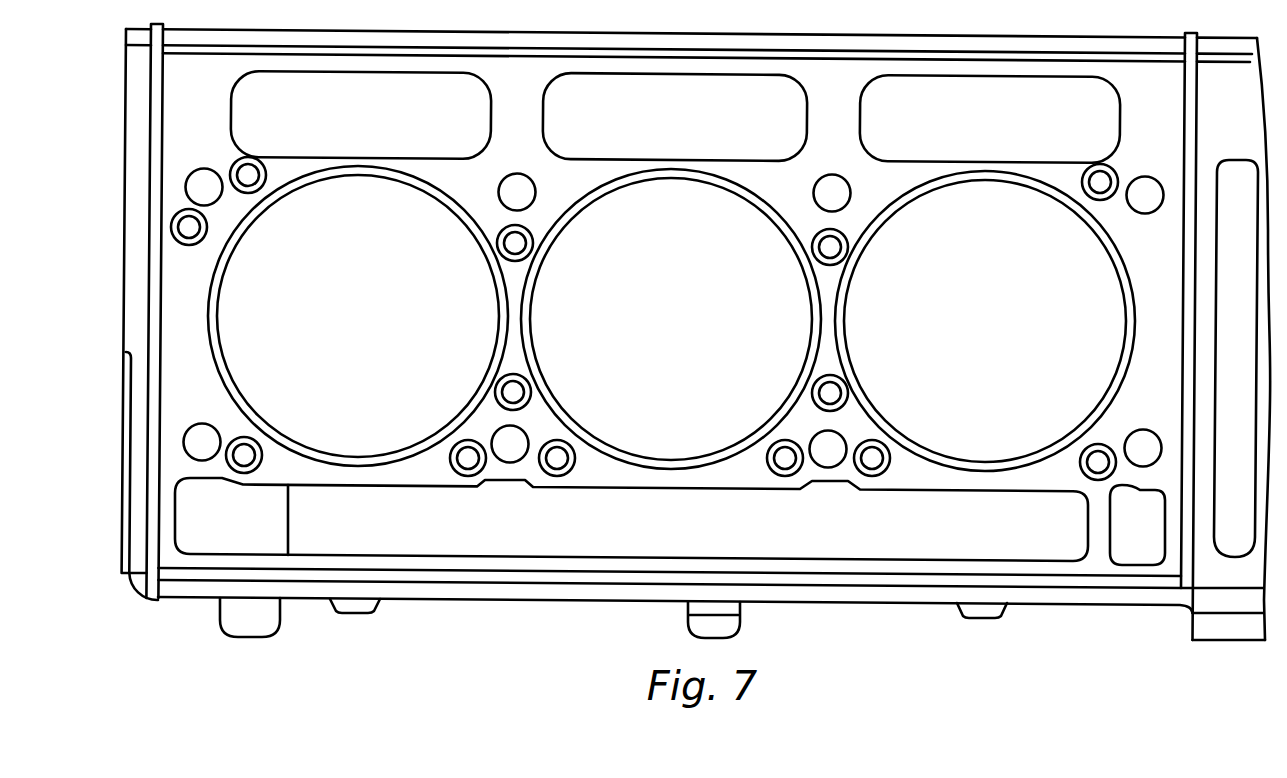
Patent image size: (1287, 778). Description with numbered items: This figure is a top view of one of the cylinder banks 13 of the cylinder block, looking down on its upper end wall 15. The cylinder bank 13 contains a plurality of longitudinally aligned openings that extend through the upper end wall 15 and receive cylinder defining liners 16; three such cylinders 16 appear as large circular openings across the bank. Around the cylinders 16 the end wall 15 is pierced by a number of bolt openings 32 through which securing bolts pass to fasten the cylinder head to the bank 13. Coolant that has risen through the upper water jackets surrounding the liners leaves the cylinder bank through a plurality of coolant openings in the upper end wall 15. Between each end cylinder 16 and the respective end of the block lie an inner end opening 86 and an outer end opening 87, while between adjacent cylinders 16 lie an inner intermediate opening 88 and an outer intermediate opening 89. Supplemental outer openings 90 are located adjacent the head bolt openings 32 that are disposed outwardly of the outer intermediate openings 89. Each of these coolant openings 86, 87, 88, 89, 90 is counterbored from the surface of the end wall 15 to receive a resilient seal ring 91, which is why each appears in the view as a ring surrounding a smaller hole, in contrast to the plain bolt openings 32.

The cylinder bank 13 is at (135, 105).
The upper end wall 15 is at (160, 260).
The cylinder liner 16 is at (218, 315).
The cylinder bank bolt opening 32 is at (205, 178).
The inner end opening 86 is at (257, 172).
The outer end opening 87 is at (243, 464).
The inner intermediate opening 88 is at (507, 243).
The outer intermediate opening 89 is at (507, 387).
The supplemental outer opening 90 is at (568, 448).
The resilient seal ring 91 is at (238, 160).